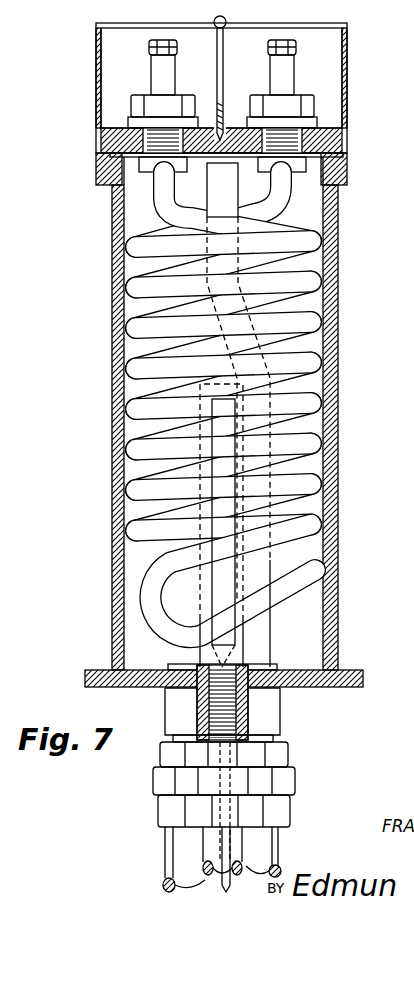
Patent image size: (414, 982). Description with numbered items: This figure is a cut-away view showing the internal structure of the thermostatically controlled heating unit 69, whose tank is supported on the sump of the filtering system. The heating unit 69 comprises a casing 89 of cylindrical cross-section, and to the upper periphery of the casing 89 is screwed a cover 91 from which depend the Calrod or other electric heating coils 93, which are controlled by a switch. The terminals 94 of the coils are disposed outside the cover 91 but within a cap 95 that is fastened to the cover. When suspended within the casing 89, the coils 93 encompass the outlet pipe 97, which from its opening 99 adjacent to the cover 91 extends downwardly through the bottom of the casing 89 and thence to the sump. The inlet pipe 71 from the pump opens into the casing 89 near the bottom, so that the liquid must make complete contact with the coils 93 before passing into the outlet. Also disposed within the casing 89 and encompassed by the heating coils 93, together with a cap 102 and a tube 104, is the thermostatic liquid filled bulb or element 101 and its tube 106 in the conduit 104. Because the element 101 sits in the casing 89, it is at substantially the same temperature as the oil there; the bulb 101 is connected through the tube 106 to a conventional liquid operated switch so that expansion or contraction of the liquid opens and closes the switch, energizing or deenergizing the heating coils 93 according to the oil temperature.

The heating unit 69 is at (339, 418).
The inlet pipe 71 is at (178, 870).
The casing 89 is at (112, 340).
The cover 91 is at (347, 149).
The electric heating coils 93 is at (305, 328).
The terminals 94 is at (271, 50).
The cap 95 is at (283, 23).
The outlet pipe 97 is at (258, 634).
The opening 99 is at (220, 164).
The thermostatic liquid filled bulb 101 is at (218, 603).
The cap 102 is at (214, 596).
The tube 104 is at (220, 849).
The tube 106 is at (218, 888).